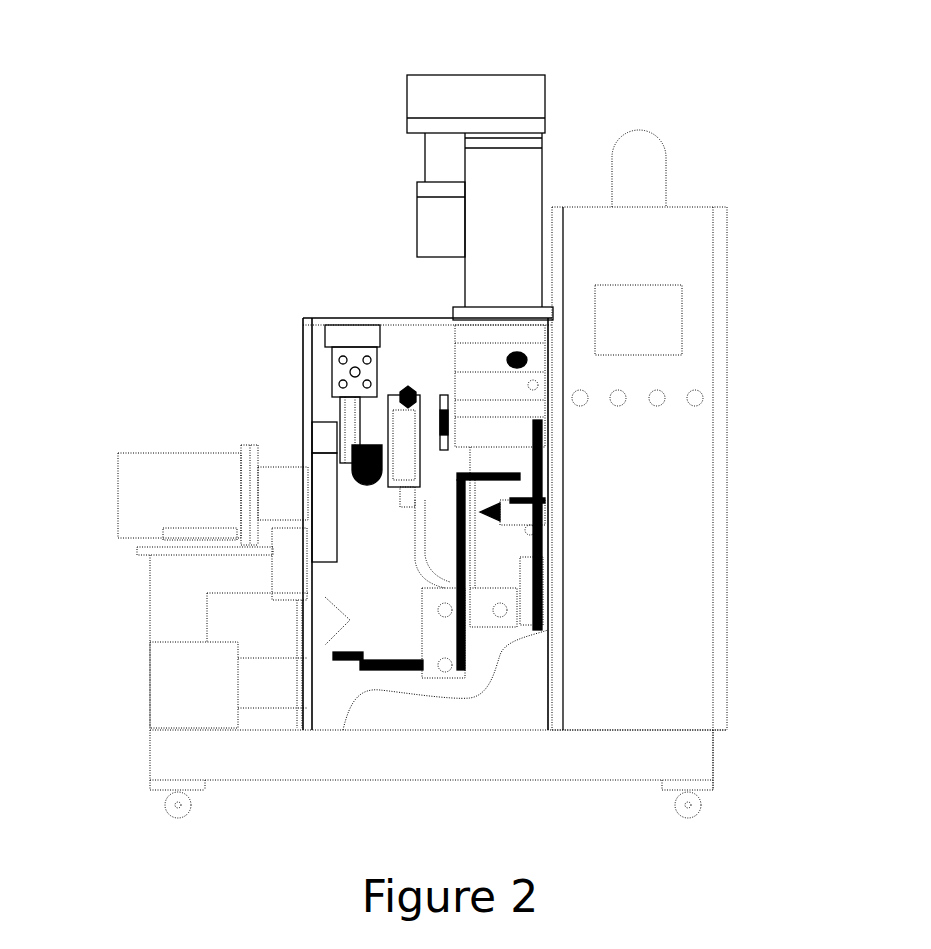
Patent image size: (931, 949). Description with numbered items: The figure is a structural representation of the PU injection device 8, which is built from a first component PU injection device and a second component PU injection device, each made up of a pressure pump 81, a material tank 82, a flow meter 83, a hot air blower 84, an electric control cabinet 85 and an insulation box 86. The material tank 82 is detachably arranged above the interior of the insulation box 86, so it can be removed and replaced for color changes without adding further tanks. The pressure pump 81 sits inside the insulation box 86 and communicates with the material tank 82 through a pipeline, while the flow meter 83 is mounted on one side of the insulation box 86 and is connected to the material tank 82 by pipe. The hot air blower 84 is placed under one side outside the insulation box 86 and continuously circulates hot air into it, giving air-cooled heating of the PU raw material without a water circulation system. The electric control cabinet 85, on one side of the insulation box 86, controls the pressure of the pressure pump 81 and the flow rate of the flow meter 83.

The PU injection device 8 is at (362, 228).
The pressure pump 81 is at (490, 253).
The material tank 82 is at (422, 368).
The flow meter 83 is at (292, 568).
The hot air blower 84 is at (273, 685).
The electric control cabinet 85 is at (647, 492).
The insulation box 86 is at (308, 320).